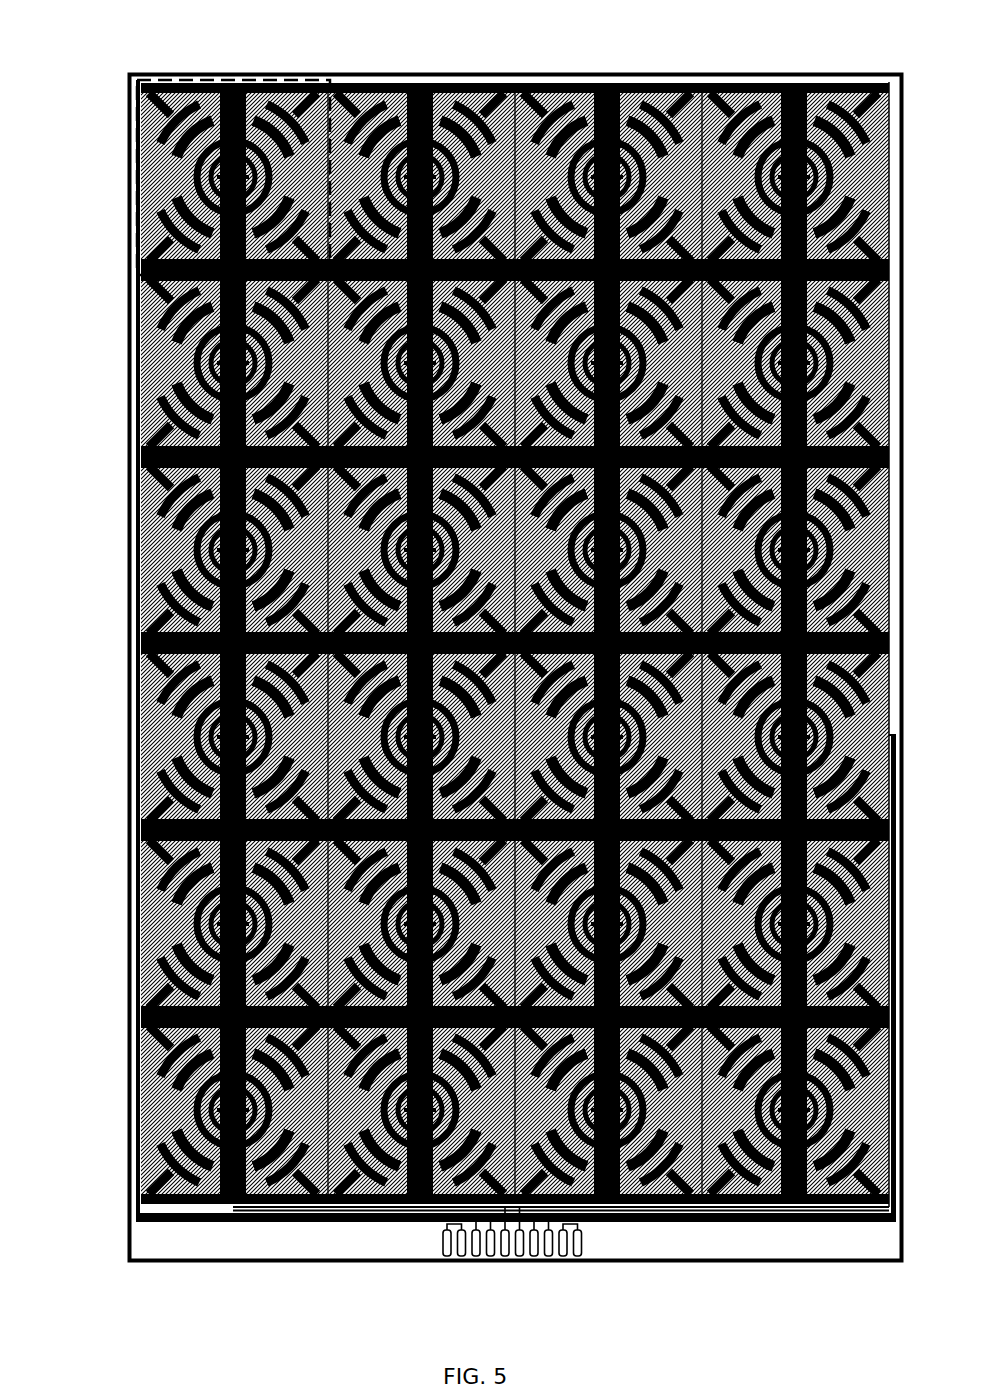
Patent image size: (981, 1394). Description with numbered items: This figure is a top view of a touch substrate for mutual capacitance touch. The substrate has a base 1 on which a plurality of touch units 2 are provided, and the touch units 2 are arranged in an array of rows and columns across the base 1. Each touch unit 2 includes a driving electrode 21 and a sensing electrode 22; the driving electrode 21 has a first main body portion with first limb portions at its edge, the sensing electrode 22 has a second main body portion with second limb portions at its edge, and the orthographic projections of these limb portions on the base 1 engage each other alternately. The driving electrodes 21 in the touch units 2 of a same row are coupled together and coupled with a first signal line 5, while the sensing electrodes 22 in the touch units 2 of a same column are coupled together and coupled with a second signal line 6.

The base 1 is at (163, 1244).
The touch unit 2 is at (313, 80).
The driving electrode 21 is at (162, 168).
The sensing electrode 22 is at (232, 100).
The first signal line 5 is at (140, 363).
The second signal line 6 is at (795, 1205).